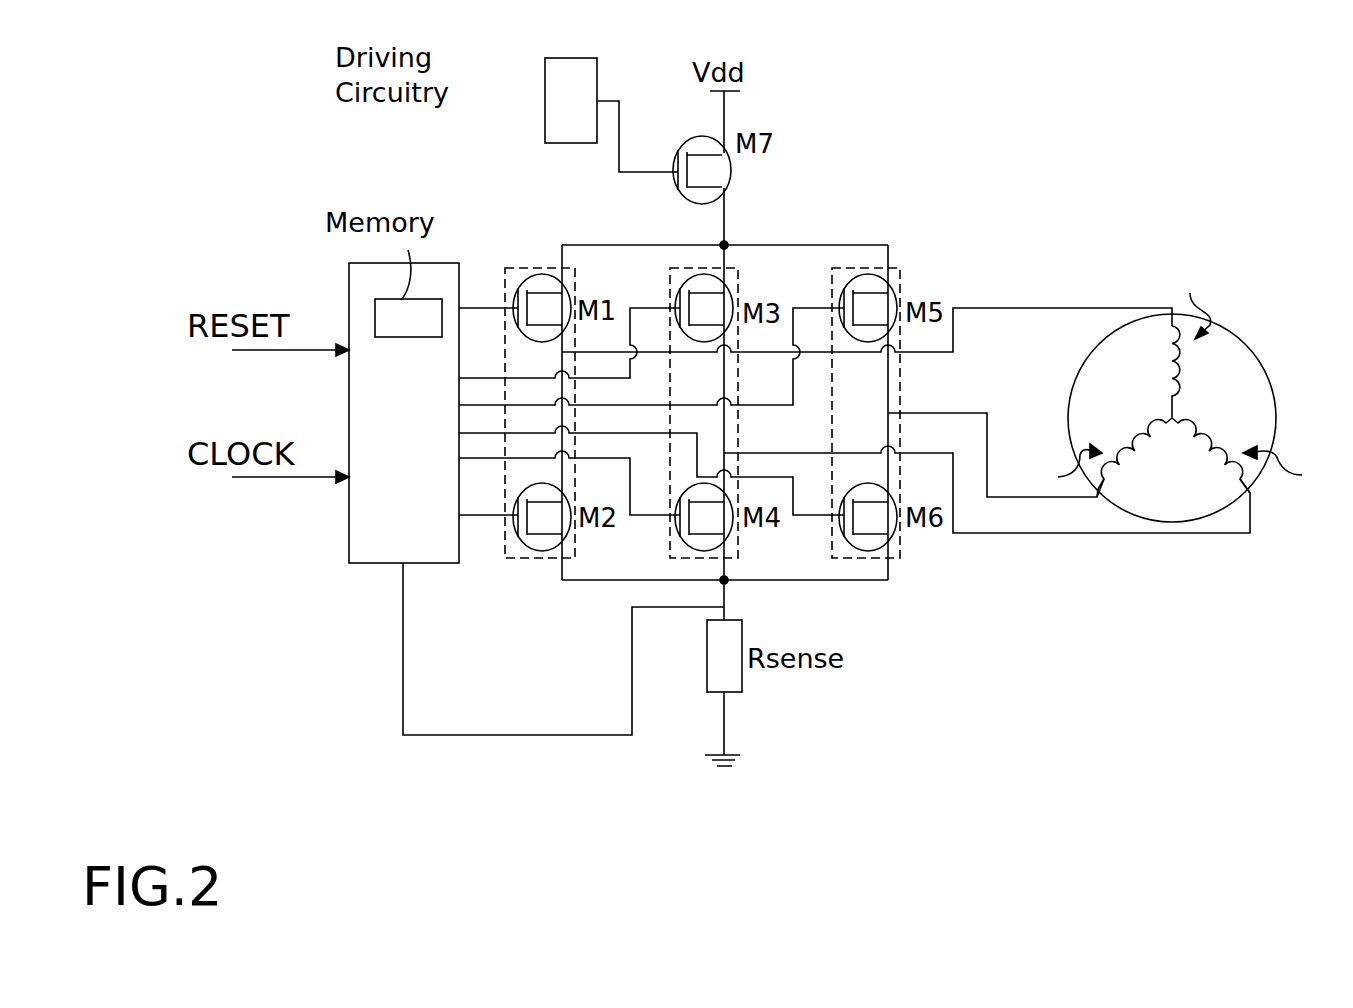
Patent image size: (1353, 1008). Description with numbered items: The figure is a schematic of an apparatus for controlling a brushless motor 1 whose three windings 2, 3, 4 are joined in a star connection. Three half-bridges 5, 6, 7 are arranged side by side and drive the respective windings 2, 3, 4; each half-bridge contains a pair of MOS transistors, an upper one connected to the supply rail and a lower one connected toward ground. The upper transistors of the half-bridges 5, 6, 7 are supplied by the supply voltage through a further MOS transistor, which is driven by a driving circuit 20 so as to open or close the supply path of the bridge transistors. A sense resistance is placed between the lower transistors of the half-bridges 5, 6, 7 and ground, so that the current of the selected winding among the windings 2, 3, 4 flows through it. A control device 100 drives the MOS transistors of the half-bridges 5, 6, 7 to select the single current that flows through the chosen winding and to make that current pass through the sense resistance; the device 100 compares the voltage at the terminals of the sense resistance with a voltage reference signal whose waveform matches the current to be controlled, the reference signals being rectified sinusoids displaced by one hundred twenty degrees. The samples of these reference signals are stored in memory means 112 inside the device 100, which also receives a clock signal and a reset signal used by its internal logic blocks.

The brushless motor 1 is at (1177, 356).
The winding 2 is at (1192, 362).
The winding 3 is at (1116, 443).
The winding 4 is at (1233, 440).
The half-bridge 5 is at (548, 255).
The half-bridge 6 is at (745, 253).
The half-bridge 7 is at (858, 256).
The circuit 20 is at (557, 107).
The device 100 is at (438, 428).
The means 112 is at (408, 318).